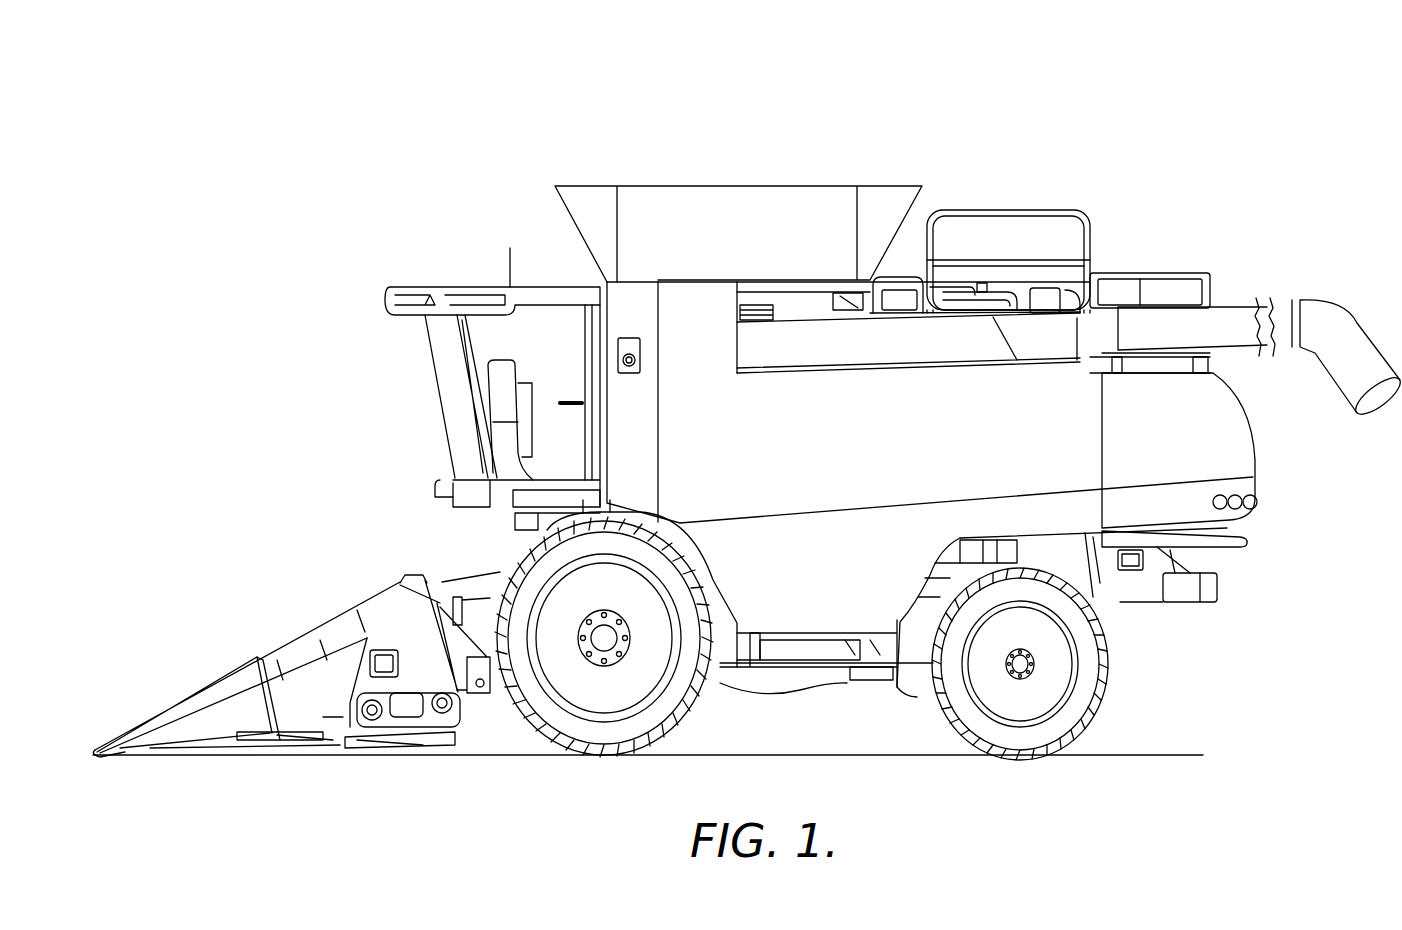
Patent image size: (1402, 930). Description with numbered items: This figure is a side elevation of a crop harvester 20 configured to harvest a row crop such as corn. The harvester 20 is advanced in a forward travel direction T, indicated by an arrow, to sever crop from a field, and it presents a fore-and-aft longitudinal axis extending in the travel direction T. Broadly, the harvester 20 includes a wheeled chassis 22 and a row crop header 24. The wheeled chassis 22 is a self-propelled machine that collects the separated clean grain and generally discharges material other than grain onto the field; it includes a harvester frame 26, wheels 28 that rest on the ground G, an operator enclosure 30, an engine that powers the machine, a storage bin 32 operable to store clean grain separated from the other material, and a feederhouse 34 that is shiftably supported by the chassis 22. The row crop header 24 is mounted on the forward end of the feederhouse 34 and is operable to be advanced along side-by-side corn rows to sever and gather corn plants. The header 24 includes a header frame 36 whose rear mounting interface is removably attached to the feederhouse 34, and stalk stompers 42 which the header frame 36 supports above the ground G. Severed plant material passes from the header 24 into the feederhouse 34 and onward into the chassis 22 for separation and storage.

The crop harvester 20 is at (1167, 106).
The wheeled chassis 22 is at (870, 672).
The row crop header 24 is at (337, 723).
The harvester frame 26 is at (813, 673).
The wheels 28 is at (590, 752).
The operator enclosure 30 is at (485, 330).
The storage bin 32 is at (820, 213).
The feederhouse 34 is at (480, 600).
The header frame 36 is at (400, 583).
The stalk stompers 42 is at (403, 748).
The ground G is at (1178, 745).
The forward travel direction T is at (357, 418).